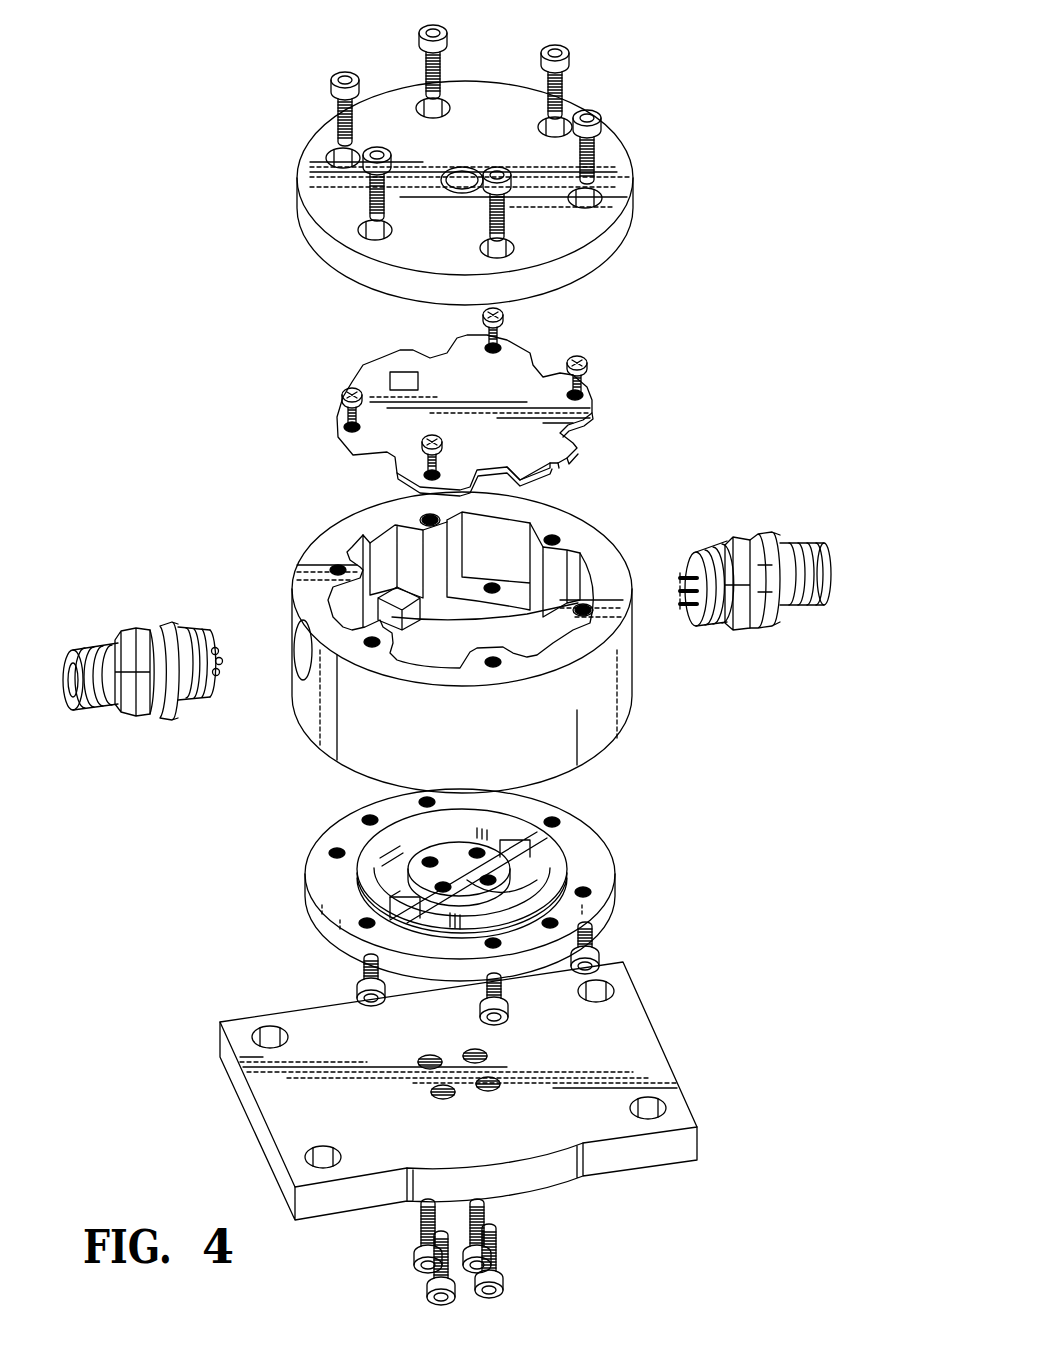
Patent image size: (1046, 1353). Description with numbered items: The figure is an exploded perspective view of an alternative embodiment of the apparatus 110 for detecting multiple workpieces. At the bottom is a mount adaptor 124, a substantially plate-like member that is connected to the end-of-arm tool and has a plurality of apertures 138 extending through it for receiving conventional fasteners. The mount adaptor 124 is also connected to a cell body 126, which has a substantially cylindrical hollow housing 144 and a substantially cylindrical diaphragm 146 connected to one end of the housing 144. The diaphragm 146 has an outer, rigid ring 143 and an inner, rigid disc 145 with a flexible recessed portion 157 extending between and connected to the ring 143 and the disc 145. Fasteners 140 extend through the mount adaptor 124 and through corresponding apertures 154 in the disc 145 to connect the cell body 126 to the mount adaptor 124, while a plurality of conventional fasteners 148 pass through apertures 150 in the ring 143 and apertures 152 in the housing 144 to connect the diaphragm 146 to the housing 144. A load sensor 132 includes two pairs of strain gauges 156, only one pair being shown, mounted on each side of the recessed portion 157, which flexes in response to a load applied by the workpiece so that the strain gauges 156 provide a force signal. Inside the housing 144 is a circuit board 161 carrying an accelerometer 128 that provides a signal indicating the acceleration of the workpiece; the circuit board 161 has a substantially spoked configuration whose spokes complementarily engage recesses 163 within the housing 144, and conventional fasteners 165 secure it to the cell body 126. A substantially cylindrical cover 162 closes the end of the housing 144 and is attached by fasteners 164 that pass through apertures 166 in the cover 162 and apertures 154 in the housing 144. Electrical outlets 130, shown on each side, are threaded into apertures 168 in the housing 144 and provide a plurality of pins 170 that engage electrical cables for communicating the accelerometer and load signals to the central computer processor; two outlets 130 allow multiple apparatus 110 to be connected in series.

The apparatus 110 is at (742, 74).
The mount adaptor 124 is at (662, 1027).
The cell body 126 is at (727, 462).
The accelerometer 128 is at (380, 362).
The electrical outlets 130 is at (762, 536).
The load sensor 132 is at (688, 750).
The apertures 138 is at (266, 1030).
The fasteners 140 is at (507, 1270).
The ring 143 is at (342, 848).
The housing 144 is at (636, 680).
The disc 145 is at (500, 888).
The diaphragm 146 is at (556, 876).
The fasteners 148 is at (360, 986).
The apertures 150 is at (328, 904).
The apertures 152 is at (556, 534).
The apertures 154 is at (400, 858).
The strain gauges 156 is at (562, 832).
The recessed portion 157 is at (422, 840).
The circuit board 161 is at (594, 440).
The cover 162 is at (634, 193).
The recesses 163 is at (352, 540).
The fasteners 164 is at (601, 114).
The fasteners 165 is at (506, 317).
The apertures 166 is at (326, 160).
The apertures 168 is at (300, 655).
The pins 170 is at (690, 616).